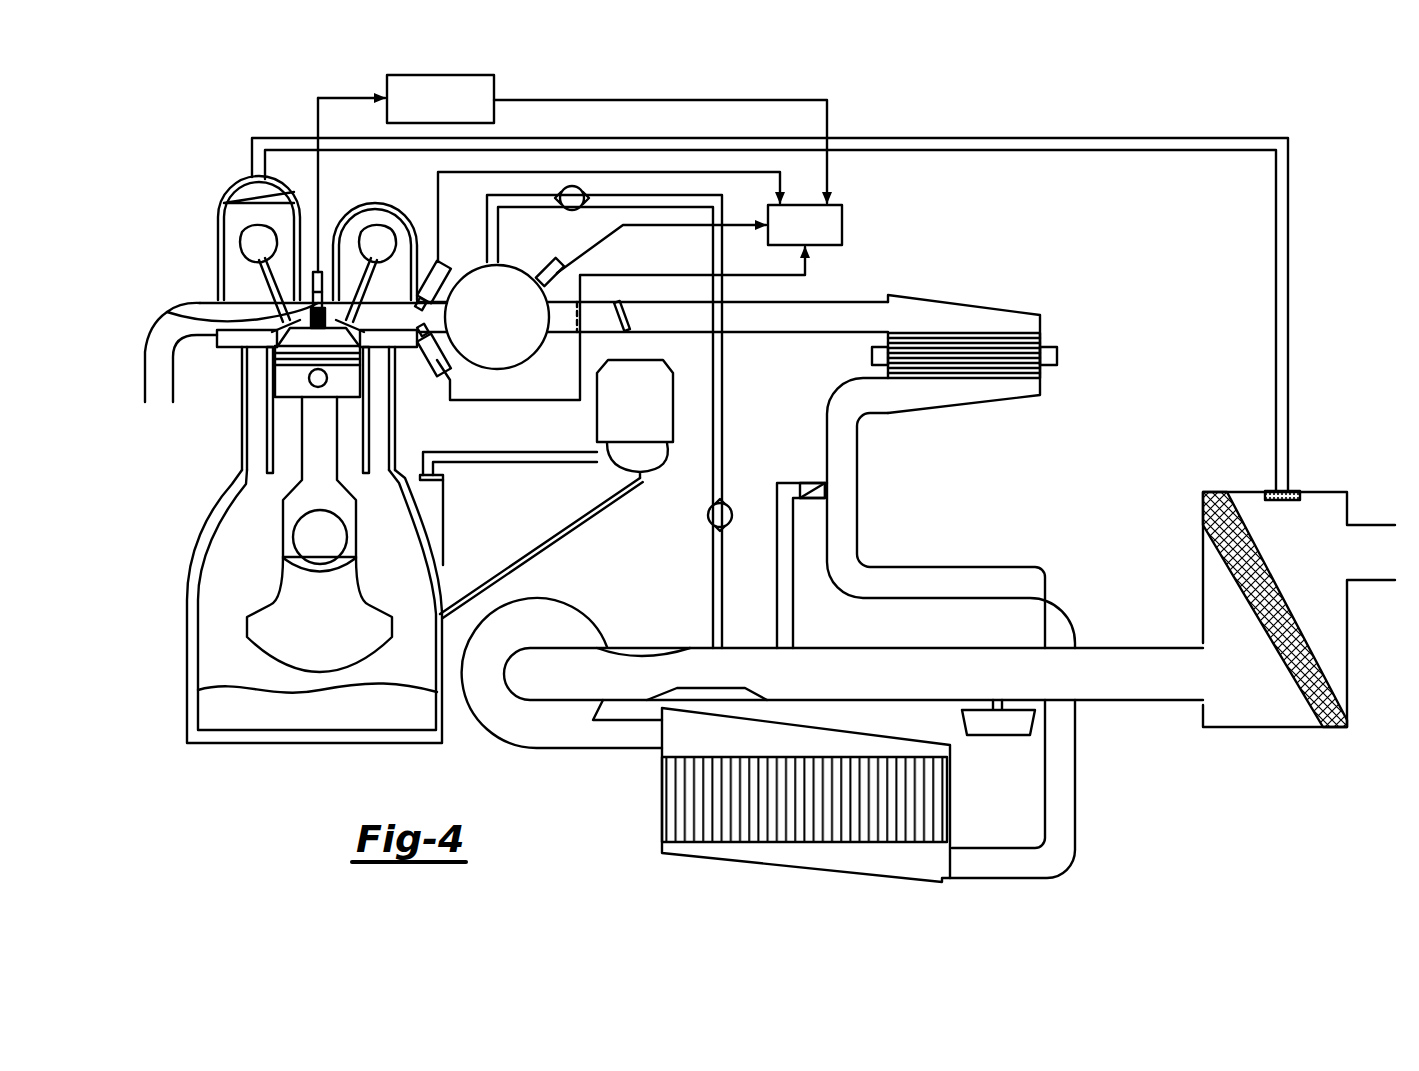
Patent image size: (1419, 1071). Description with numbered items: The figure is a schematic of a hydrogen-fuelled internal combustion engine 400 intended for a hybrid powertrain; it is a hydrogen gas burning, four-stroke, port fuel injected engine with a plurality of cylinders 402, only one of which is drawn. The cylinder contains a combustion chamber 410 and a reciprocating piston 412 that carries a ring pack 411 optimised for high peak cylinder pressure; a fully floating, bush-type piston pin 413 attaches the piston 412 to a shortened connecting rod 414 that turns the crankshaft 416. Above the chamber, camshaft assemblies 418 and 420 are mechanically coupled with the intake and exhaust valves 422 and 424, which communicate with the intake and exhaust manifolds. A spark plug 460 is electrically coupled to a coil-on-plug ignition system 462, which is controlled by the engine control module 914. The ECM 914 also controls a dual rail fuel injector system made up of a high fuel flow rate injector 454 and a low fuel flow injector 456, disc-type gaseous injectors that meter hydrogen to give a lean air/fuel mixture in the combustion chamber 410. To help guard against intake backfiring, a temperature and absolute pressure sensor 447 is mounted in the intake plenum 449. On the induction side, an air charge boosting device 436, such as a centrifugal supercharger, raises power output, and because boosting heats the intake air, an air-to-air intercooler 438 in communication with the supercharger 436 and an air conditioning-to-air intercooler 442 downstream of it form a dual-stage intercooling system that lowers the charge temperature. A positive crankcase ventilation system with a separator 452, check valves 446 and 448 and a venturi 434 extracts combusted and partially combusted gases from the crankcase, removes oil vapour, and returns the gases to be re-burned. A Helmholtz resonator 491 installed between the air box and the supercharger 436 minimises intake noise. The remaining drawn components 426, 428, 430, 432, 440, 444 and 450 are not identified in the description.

The hydrogen-fuelled internal combustion engine 400 is at (753, 462).
The cylinder 402 is at (226, 456).
The combustion chamber 410 is at (330, 340).
The ring pack 411 is at (280, 353).
The piston 412 is at (282, 387).
The piston pin 413 is at (320, 381).
The connecting rod 414 is at (310, 485).
The crankshaft 416 is at (275, 650).
The camshaft assembly 418 is at (240, 237).
The camshaft assembly 420 is at (378, 228).
The intake valve 422 is at (365, 265).
The exhaust valve 424 is at (255, 272).
The exhaust port 426 is at (398, 327).
The intake port 428 is at (150, 342).
The air cleaner 430 is at (1347, 633).
The air filter element 432 is at (1313, 703).
The venturi 434 is at (685, 645).
The air charge boosting device 436 is at (537, 752).
The air-to-air intercooler 438 is at (745, 865).
The intake air temperature sensor 440 is at (810, 482).
The air conditioning-to-air intercooler 442 is at (1013, 310).
The throttle valve 444 is at (627, 330).
The check valve 446 is at (563, 209).
The temperature and absolute pressure (TMAP) sensor 447 is at (554, 262).
The check valve 448 is at (708, 520).
The intake plenum 449 is at (520, 365).
The crankcase ventilation line 450 is at (448, 480).
The separator 452 is at (665, 450).
The high fuel flow rate injector 454 is at (450, 283).
The low fuel flow injector 456 is at (447, 347).
The spark plug 460 is at (167, 312).
The ignition system 462 is at (405, 75).
The Helmholtz resonator 491 is at (1002, 727).
The engine control module (ECM) 914 is at (843, 223).